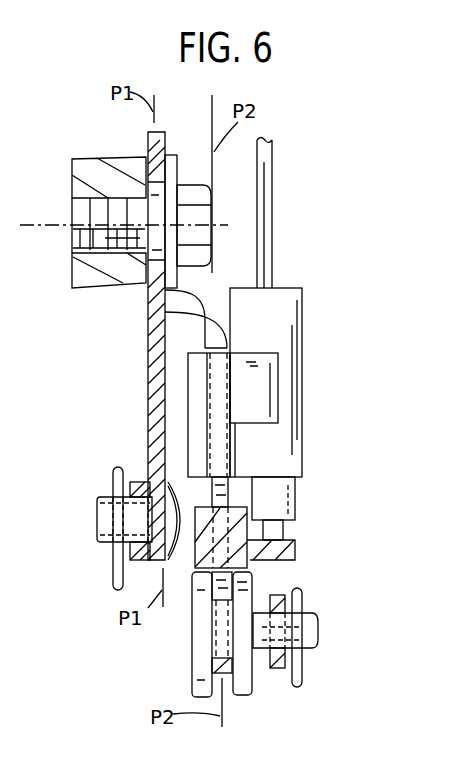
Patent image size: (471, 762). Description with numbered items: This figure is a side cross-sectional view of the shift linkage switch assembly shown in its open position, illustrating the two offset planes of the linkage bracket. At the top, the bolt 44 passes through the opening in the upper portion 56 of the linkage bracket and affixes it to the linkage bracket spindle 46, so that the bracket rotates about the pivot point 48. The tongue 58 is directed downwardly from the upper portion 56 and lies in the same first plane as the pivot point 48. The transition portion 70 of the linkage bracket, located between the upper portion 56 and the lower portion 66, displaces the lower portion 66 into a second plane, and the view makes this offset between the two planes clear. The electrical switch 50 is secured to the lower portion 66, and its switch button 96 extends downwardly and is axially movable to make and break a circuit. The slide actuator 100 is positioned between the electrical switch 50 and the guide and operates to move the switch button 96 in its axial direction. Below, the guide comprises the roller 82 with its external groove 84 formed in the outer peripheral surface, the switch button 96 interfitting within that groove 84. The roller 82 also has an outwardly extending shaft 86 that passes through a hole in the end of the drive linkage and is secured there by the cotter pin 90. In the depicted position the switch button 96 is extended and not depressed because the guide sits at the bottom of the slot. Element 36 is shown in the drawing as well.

The pin 36 is at (275, 667).
The bolt 44 is at (190, 190).
The linkage bracket spindle 46 is at (97, 284).
The pivot point 48 is at (52, 230).
The electrical switch 50 is at (278, 323).
The upper portion 56 is at (152, 143).
The tongue 58 is at (160, 398).
The lower portion 66 is at (223, 500).
The transition portion 70 is at (180, 312).
The roller 82 is at (245, 668).
The groove 84 is at (230, 692).
The shaft 86 is at (305, 628).
The cotter pin 90 is at (300, 660).
The switch button 96 is at (270, 532).
The slide actuator 100 is at (285, 553).